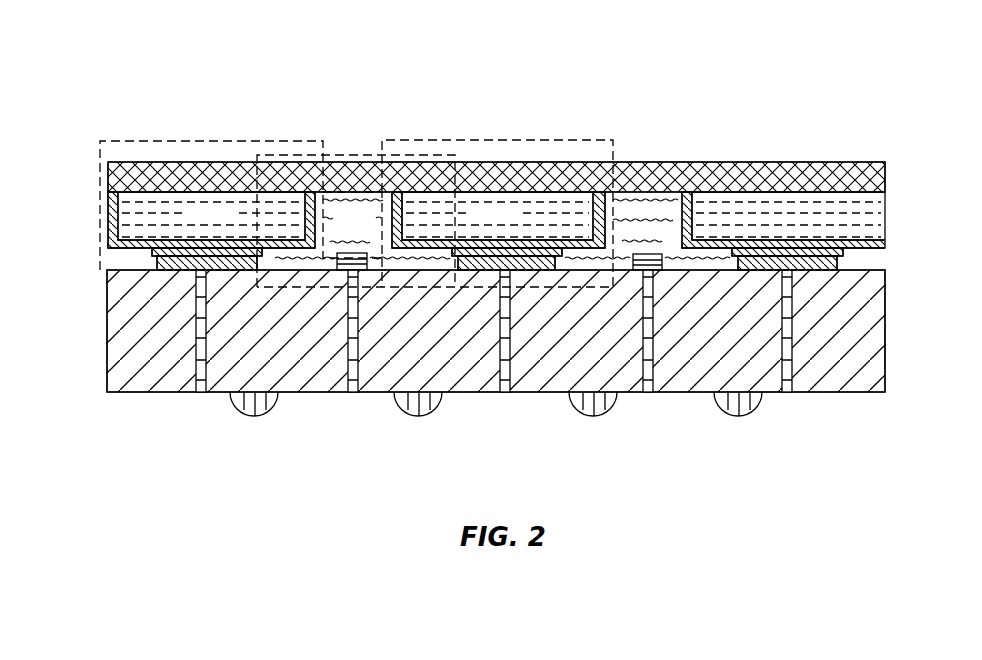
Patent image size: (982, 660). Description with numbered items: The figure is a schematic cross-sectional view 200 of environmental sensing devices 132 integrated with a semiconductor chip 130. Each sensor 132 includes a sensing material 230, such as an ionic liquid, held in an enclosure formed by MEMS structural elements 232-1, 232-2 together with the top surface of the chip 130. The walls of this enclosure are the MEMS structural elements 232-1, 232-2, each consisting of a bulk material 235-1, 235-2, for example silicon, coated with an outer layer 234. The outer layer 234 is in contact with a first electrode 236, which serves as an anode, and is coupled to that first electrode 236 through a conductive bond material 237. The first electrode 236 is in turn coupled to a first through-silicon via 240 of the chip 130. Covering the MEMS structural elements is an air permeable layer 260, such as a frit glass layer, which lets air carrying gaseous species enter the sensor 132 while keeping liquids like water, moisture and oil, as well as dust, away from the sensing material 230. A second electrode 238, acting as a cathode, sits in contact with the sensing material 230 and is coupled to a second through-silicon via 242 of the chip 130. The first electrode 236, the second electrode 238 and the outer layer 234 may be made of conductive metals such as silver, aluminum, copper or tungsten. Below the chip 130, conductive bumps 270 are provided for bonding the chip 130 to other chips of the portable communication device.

The cross-sectional view 200 is at (126, 4).
The semiconductor chip 130 is at (138, 393).
The environmental sensing device 132 is at (400, 155).
The sensing material 230 is at (341, 228).
The MEMS structural element 232-1 is at (212, 140).
The MEMS structural element 232-2 is at (492, 139).
The outer layer 234 is at (310, 165).
The bulk material 235-1 is at (190, 223).
The bulk material 235-2 is at (477, 223).
The first electrode 236 is at (219, 268).
The conductive bond material 237 is at (152, 258).
The second electrode 238 is at (344, 268).
The first through-silicon via 240 is at (196, 369).
The second through-silicon via 242 is at (348, 373).
The air permeable layer 260 is at (726, 161).
The conductive bumps 270 is at (428, 415).